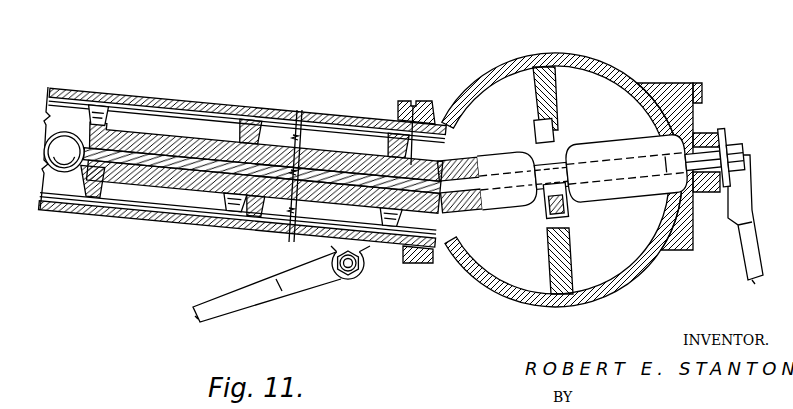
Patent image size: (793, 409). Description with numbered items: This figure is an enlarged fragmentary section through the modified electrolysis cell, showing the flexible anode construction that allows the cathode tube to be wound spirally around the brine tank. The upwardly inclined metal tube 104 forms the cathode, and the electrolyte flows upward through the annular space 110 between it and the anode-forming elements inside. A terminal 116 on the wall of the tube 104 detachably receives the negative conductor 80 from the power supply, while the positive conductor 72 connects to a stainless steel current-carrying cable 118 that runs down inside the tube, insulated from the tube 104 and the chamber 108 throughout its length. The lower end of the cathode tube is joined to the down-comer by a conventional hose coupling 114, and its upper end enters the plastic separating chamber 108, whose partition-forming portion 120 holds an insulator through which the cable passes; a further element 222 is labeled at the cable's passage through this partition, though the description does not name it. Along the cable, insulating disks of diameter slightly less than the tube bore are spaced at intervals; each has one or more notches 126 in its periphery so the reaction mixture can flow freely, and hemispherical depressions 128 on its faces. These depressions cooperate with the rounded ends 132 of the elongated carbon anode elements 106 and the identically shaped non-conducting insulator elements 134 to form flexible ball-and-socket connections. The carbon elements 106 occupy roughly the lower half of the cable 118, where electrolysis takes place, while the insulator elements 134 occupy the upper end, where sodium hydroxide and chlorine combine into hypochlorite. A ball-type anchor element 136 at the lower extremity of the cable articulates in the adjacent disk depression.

The positive lead 72 is at (752, 249).
The negative lead 80 is at (243, 298).
The metal tube 104 is at (230, 112).
The carbon rod 106 is at (135, 177).
The chamber 108 is at (588, 63).
The annular space 110 is at (197, 128).
The hose coupling 114 is at (418, 270).
The terminal 116 is at (372, 268).
The current-carrying cable 118 is at (302, 176).
The partition-forming portion 120 is at (539, 98).
The notch 126 is at (105, 115).
The hemispherical depression 128 is at (268, 218).
The rounded end 132 is at (262, 158).
The insulator element 134 is at (343, 156).
The ball-type anchor element 136 is at (65, 138).
The pivot pin 222 is at (554, 143).